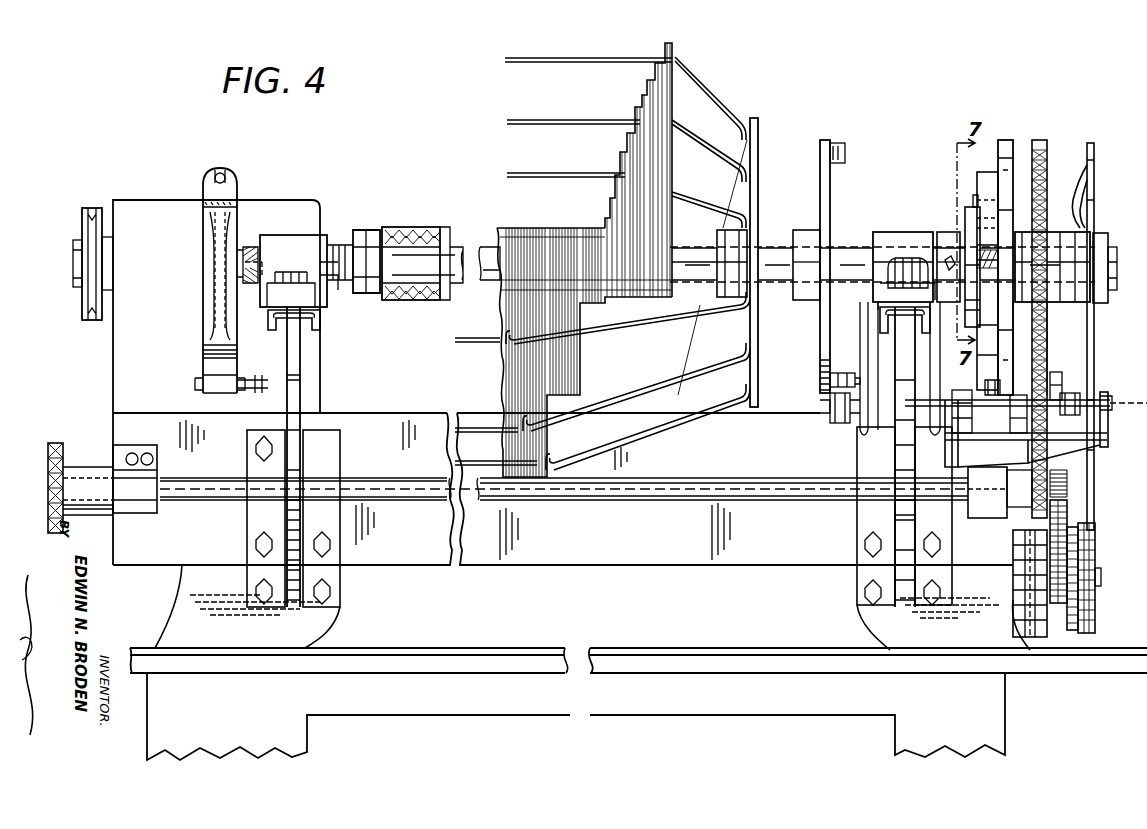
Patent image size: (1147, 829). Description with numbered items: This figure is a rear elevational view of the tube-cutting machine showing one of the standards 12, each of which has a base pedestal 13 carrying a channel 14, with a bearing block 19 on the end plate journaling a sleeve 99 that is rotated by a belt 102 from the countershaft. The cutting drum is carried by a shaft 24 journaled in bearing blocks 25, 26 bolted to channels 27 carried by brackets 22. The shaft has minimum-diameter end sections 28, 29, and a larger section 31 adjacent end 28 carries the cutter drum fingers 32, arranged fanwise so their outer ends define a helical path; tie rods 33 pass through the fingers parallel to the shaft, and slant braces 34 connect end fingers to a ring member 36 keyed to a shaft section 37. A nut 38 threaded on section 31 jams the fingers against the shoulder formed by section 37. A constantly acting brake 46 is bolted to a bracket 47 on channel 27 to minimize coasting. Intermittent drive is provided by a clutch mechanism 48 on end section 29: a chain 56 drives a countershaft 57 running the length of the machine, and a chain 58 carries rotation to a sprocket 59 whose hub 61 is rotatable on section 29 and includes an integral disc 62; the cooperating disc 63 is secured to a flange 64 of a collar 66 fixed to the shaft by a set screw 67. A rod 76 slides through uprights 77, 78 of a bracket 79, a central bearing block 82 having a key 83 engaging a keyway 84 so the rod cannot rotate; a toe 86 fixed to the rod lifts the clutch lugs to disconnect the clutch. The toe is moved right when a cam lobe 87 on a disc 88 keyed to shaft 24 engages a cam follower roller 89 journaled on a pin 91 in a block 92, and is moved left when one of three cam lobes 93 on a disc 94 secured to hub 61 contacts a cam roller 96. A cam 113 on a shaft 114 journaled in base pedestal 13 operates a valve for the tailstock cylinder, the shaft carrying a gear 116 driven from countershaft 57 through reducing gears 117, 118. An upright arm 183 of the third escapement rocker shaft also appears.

The standards 12 is at (100, 373).
The base pedestal 13 is at (178, 585).
The channel 14 is at (385, 422).
The bearing block 19 is at (178, 208).
The brackets 22 is at (285, 400).
The shaft 24 is at (712, 240).
The bearing block 25 is at (278, 234).
The bearing block 26 is at (905, 218).
The channels 27 is at (312, 320).
The end section 28 is at (246, 246).
The end section 29 is at (910, 248).
The shaft section 31 is at (462, 260).
The cutter drum fingers 32 is at (418, 228).
The tie rods 33 is at (572, 108).
The slant braces 34 is at (712, 135).
The ring member 36 is at (760, 193).
The shaft section 37 is at (686, 240).
The nut 38 is at (363, 229).
The brake 46 is at (202, 225).
The bracket 47 is at (240, 352).
The clutch mechanism 48 is at (1009, 133).
The chain 56 is at (58, 443).
The countershaft 57 is at (220, 478).
The chain 58 is at (1045, 140).
The sprocket 59 is at (1048, 148).
The hub 61 is at (1063, 232).
The disc 62 is at (1013, 330).
The disc 63 is at (990, 175).
The flange 64 is at (968, 205).
The collar 66 is at (984, 295).
The set screw 67 is at (944, 265).
The rod 76 is at (1118, 400).
The upright 77 is at (1108, 428).
The upright 78 is at (945, 436).
The bracket 79 is at (1100, 448).
The central bearing block 82 is at (1040, 370).
The key 83 is at (1015, 425).
The keyway 84 is at (985, 400).
The toe 86 is at (960, 440).
The cam lobe 87 is at (840, 145).
The disc 88 is at (820, 325).
The cam follower roller 89 is at (850, 372).
The pin 91 is at (830, 366).
The block 92 is at (830, 397).
The cam lobes 93 is at (1093, 170).
The disc 94 is at (1093, 165).
The cam roller 96 is at (1080, 360).
The sleeve 99 is at (76, 256).
The belt 102 is at (90, 205).
The cam 113 is at (1095, 548).
The shaft 114 is at (1100, 572).
The gear 116 is at (1078, 535).
The reducing gear 117 is at (1067, 482).
The reducing gear 118 is at (1067, 515).
The upright arm 183 is at (965, 240).